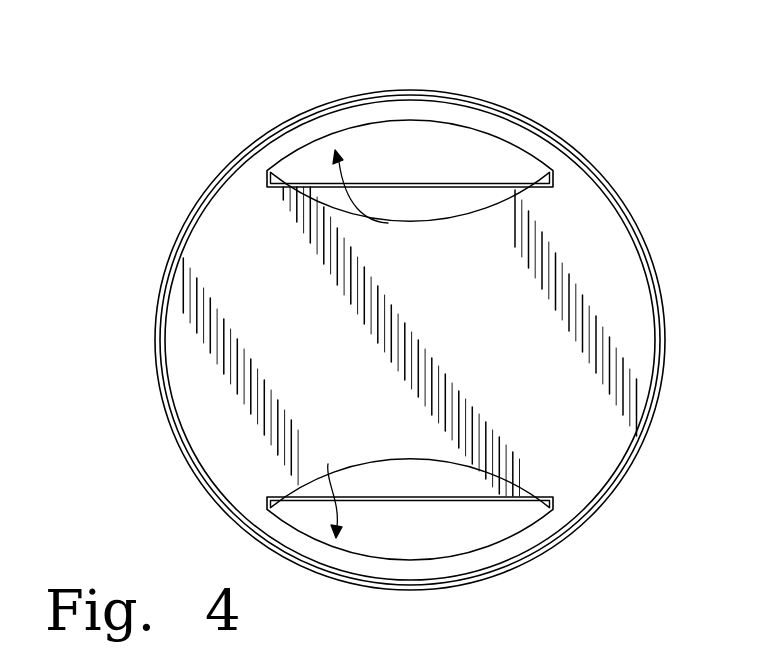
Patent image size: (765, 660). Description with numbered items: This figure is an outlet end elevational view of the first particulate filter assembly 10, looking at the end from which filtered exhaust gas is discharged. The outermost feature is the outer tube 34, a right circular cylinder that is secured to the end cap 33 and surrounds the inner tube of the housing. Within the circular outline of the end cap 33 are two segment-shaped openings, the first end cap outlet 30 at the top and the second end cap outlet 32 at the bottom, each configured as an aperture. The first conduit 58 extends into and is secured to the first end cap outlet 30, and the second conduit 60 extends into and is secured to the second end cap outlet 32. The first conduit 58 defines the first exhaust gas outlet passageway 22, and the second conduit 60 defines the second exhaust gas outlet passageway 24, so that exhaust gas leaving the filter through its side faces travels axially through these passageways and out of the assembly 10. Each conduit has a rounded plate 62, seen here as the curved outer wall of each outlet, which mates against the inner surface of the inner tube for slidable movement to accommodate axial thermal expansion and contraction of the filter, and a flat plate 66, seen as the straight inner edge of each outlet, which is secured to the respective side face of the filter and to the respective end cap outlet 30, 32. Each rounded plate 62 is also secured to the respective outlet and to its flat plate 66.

The first particulate filter assembly 10 is at (419, 328).
The first exhaust gas outlet passageway 22 is at (410, 118).
The second exhaust gas outlet passageway 24 is at (410, 492).
The first end cap outlet 30 is at (477, 133).
The second end cap outlet 32 is at (473, 500).
The end cap 33 is at (607, 231).
The outer tube 34 is at (665, 350).
The first conduit 58 is at (375, 194).
The second conduit 60 is at (330, 488).
The rounded plate 62 is at (422, 126).
The flat plate 66 is at (422, 184).